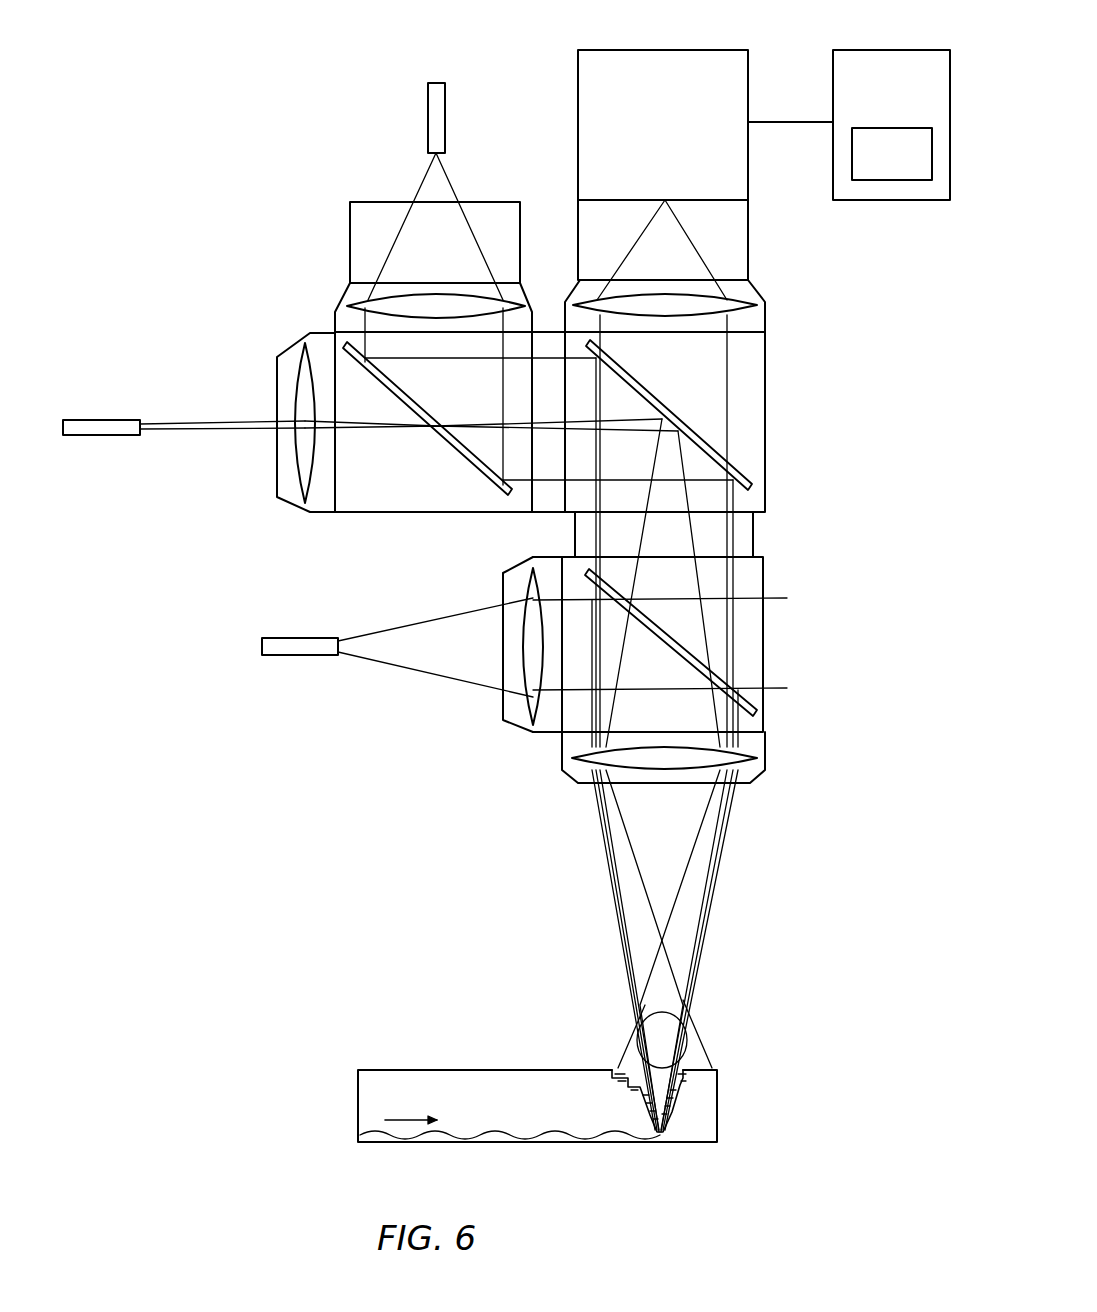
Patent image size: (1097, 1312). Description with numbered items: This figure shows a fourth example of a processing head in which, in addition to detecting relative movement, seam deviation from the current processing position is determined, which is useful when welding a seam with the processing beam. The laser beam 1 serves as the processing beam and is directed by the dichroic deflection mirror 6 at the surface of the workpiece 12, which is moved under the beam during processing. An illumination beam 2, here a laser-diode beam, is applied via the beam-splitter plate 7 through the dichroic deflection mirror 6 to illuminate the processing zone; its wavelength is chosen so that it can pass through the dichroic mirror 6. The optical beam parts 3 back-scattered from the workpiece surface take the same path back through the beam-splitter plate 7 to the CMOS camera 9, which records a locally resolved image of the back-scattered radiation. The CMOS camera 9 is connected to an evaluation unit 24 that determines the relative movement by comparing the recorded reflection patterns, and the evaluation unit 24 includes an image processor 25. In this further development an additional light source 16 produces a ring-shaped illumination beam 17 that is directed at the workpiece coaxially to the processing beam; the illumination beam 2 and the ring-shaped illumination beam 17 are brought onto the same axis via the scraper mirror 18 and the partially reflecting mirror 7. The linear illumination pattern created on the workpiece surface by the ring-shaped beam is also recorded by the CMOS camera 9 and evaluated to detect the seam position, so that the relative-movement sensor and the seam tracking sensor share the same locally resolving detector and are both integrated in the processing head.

The laser beam 1 is at (452, 666).
The illumination beam 2 is at (222, 430).
The optical beam parts 3 is at (676, 248).
The dichroic deflection mirror 6 is at (755, 695).
The beam-splitter plate 7 is at (740, 470).
The CMOS camera 9 is at (646, 68).
The workpiece 12 is at (717, 1125).
The additional light source 16 is at (428, 115).
The ring-shaped illumination beam 17 is at (395, 245).
The scraper mirror 18 is at (478, 478).
The evaluation unit 24 is at (882, 67).
The image processor 25 is at (896, 166).